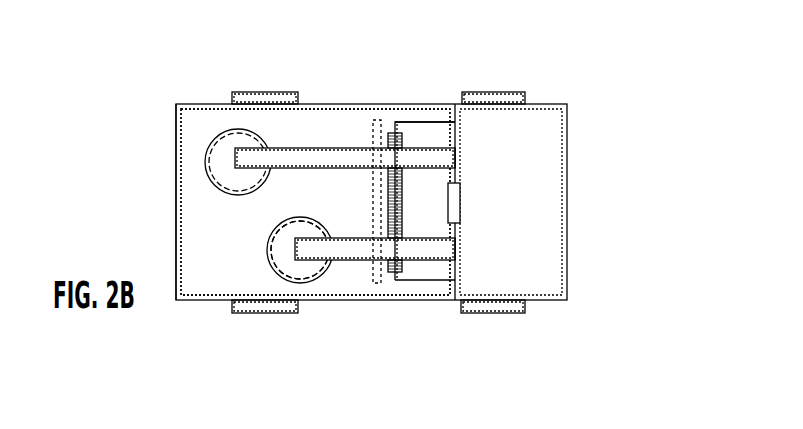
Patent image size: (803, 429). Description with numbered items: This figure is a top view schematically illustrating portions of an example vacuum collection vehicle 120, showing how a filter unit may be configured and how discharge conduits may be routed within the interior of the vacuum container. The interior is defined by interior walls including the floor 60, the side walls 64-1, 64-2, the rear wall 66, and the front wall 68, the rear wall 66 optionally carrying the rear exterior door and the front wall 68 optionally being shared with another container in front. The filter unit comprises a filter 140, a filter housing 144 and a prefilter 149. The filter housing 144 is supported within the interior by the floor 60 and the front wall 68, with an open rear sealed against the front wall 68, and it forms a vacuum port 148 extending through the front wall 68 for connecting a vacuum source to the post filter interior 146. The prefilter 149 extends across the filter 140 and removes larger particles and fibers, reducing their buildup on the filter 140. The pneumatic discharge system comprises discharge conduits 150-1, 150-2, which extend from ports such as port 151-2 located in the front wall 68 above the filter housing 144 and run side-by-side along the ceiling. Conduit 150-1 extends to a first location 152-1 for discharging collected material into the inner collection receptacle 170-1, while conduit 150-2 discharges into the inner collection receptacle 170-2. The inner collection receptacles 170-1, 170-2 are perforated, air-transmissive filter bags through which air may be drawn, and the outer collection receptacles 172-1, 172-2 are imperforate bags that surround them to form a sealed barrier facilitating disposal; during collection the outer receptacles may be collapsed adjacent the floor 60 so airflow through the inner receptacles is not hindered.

The floor 60 is at (223, 258).
The side wall 64-1 is at (327, 300).
The side wall 64-2 is at (318, 104).
The rear wall 66 is at (182, 180).
The front wall 68 is at (452, 288).
The vacuum collection vehicle 120 is at (606, 64).
The filter 140 is at (402, 137).
The filter housing 144 is at (452, 122).
The post filter interior 146 is at (443, 147).
The vacuum port 148 is at (460, 205).
The prefilter 149 is at (378, 120).
The discharge conduit 150-1 is at (355, 260).
The discharge conduit 150-2 is at (345, 148).
The port 151-2 is at (455, 158).
The first location 152-1 is at (302, 223).
The inner collection receptacle 170-1 is at (270, 265).
The inner collection receptacle 170-2 is at (225, 129).
The outer collection receptacle 172-1 is at (290, 278).
The outer collection receptacle 172-2 is at (212, 140).